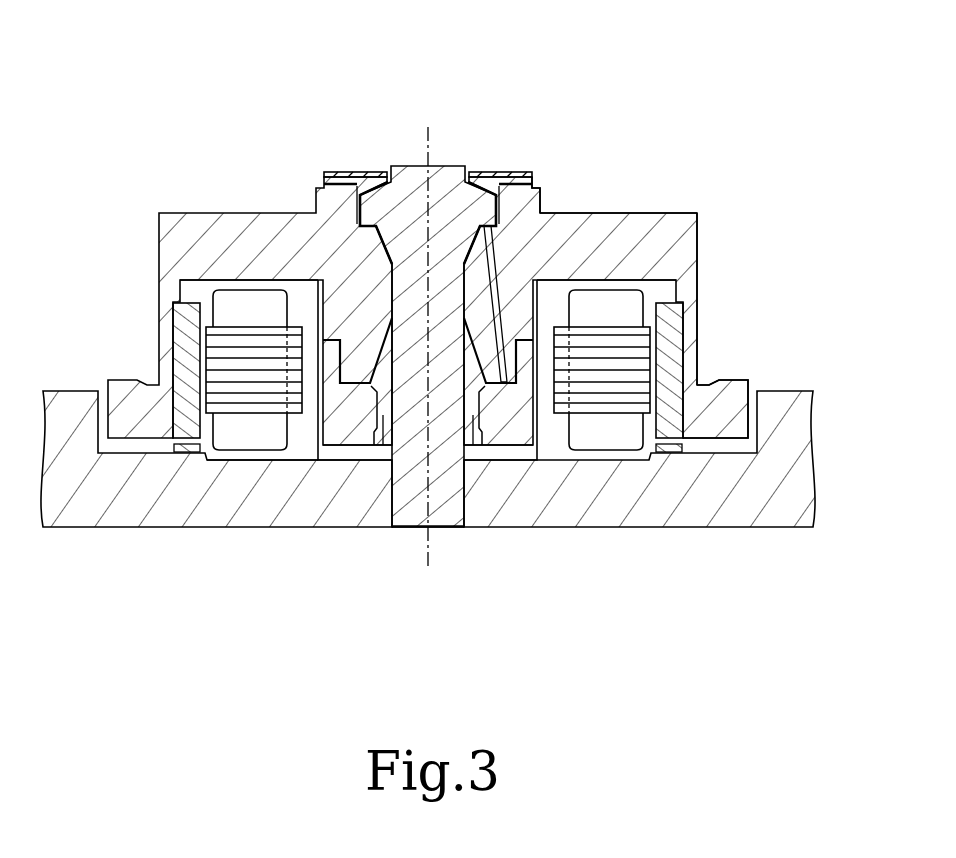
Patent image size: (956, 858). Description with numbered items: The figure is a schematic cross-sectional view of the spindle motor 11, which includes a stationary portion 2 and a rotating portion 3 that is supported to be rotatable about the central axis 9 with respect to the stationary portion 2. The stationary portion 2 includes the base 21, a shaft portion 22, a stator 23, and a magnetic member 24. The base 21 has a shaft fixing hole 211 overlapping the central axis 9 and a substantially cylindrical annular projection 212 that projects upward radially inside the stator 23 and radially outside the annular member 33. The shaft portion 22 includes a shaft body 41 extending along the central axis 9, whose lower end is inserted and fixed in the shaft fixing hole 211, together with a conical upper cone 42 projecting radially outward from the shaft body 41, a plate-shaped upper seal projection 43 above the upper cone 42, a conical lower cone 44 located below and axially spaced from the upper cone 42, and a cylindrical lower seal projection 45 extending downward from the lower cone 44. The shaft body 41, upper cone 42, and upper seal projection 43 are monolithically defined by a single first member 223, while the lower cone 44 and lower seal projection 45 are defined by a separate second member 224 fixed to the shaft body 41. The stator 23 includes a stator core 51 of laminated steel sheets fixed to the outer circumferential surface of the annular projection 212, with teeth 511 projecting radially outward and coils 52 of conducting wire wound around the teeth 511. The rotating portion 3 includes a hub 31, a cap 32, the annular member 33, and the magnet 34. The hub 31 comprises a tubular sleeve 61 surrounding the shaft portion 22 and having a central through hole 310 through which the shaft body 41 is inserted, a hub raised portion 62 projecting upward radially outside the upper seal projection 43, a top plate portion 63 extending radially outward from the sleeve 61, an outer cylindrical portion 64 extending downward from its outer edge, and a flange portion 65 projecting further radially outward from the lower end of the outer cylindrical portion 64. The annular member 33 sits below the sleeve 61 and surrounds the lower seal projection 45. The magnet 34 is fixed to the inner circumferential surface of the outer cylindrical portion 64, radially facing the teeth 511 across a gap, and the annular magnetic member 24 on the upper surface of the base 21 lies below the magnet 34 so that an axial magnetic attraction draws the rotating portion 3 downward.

The spindle motor 11 is at (220, 130).
The stationary portion 2 is at (126, 547).
The base 21 is at (650, 510).
The shaft fixing hole 211 is at (410, 505).
The annular projection 212 is at (303, 432).
The shaft portion 22 is at (447, 152).
The first member 223 is at (380, 112).
The second member 224 is at (535, 584).
The stator 23 is at (270, 580).
The magnetic member 24 is at (183, 450).
The rotating portion 3 is at (690, 192).
The hub 31 is at (667, 110).
The central through hole 310 is at (447, 326).
The cap 32 is at (478, 171).
The annular member 33 is at (498, 390).
The magnet 34 is at (187, 332).
The shaft body 41 is at (340, 330).
The upper cone 42 is at (374, 226).
The upper seal projection 43 is at (404, 312).
The lower cone 44 is at (502, 400).
The lower seal projection 45 is at (471, 440).
The stator core 51 is at (227, 424).
The teeth 511 is at (233, 365).
The coils 52 is at (253, 434).
The sleeve 61 is at (497, 224).
The hub raised portion 62 is at (540, 175).
The top plate portion 63 is at (588, 235).
The outer cylindrical portion 64 is at (693, 317).
The flange portion 65 is at (733, 410).
The central axis 9 is at (426, 143).